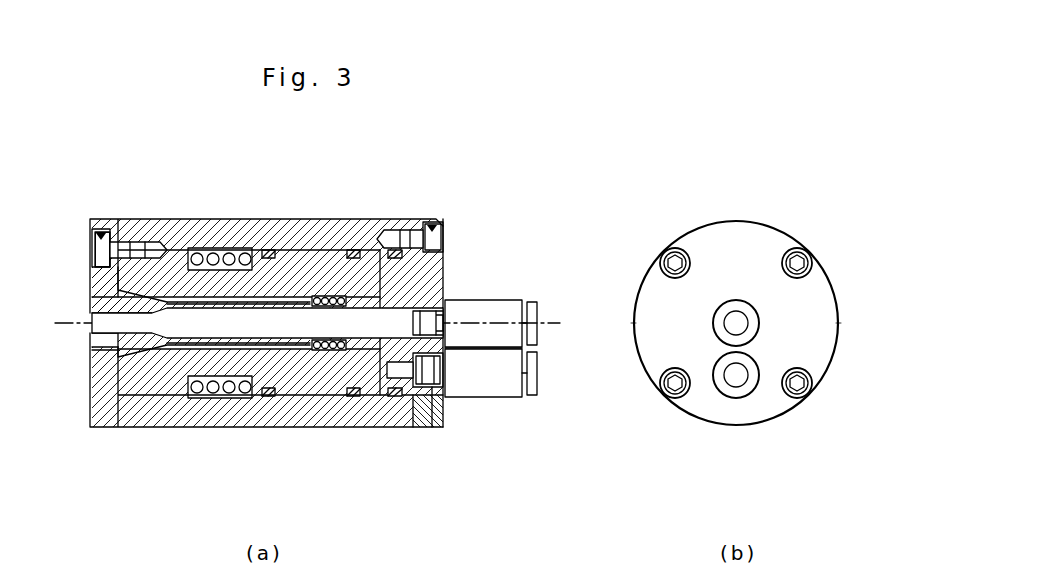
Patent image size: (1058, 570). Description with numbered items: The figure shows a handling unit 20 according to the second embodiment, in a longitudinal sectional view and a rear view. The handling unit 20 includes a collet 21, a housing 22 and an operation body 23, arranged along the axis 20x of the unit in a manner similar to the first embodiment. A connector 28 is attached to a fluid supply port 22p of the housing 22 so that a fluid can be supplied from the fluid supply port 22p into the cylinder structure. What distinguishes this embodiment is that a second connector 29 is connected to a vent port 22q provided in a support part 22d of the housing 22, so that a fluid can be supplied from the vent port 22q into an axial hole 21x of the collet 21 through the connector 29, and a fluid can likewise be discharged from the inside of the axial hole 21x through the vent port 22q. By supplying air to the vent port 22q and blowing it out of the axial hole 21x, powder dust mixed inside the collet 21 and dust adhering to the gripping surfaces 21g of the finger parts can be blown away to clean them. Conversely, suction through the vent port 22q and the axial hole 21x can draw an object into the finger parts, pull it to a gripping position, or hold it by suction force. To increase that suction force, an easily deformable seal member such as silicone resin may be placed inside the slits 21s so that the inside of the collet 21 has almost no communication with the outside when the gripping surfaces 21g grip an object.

The handling unit 20 is at (488, 114).
The axis line 20x is at (548, 327).
The collet 21 is at (137, 340).
The slits 21s is at (142, 302).
The gripping surfaces 21g is at (88, 320).
The axial hole 21x is at (183, 333).
The housing 22 is at (272, 427).
The support part 22d is at (378, 355).
The fluid supply port 22p is at (422, 378).
The vent port 22q is at (415, 307).
The operation body 23 is at (303, 250).
The connector 28 is at (713, 372).
The connector 29 is at (714, 312).